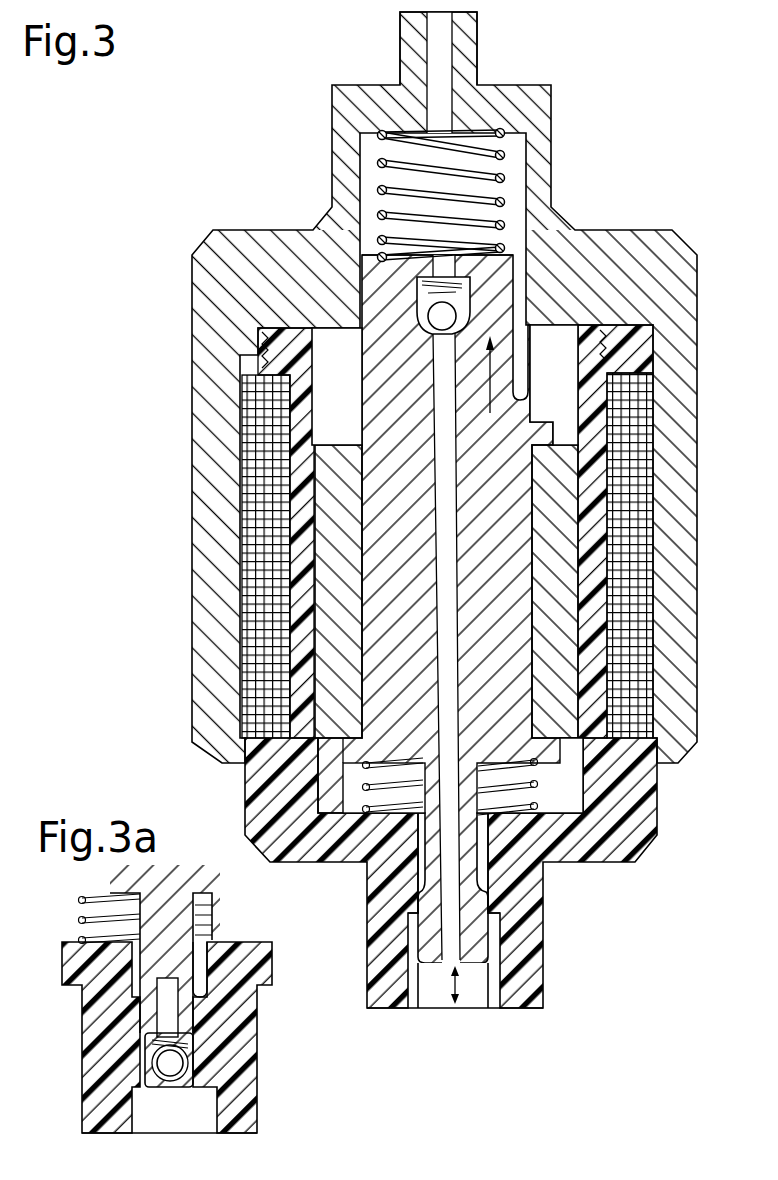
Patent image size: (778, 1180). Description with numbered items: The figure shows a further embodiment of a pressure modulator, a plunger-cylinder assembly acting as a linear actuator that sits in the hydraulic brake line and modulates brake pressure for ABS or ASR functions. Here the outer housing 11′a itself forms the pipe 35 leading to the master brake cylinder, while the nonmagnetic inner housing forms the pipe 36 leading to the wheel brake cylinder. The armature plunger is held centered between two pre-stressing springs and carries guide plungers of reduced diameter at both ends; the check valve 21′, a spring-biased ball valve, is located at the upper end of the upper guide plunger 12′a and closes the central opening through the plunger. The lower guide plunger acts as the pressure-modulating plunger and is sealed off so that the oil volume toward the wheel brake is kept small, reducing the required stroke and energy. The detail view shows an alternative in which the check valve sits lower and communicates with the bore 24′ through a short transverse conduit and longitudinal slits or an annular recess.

In FIG. 3, the pipe 35 is at (477, 33).
In FIG. 3A, the pipe 35 is at (187, 988).
In FIG. 3, the upper guide plunger 12′a is at (372, 284).
In FIG. 3, the check valve 21′ is at (465, 298).
In FIG. 3, the outer housing 11′a is at (653, 240).
In FIG. 3, the bore 24′ is at (583, 645).
In FIG. 3, the pipe 36 is at (540, 991).
In FIG. 3A, the pipe 36 is at (207, 968).